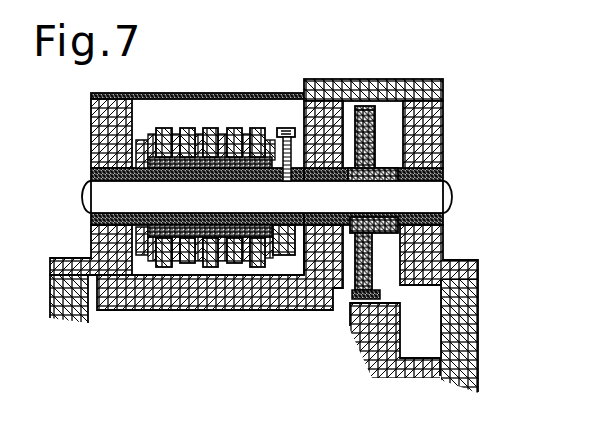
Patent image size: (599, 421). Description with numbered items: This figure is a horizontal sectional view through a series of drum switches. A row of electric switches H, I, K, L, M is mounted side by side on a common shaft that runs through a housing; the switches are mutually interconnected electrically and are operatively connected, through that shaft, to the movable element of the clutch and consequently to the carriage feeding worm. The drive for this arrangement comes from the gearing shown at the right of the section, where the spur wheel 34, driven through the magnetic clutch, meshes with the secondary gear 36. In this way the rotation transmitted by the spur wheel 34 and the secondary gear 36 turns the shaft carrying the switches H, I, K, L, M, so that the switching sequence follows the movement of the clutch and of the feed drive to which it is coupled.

The secondary gear 36 is at (370, 150).
The spur wheel 34 is at (395, 331).
The electric switch M is at (163, 128).
The electric switch L is at (187, 128).
The electric switch K is at (210, 128).
The electric switch I is at (234, 128).
The electric switch H is at (257, 128).